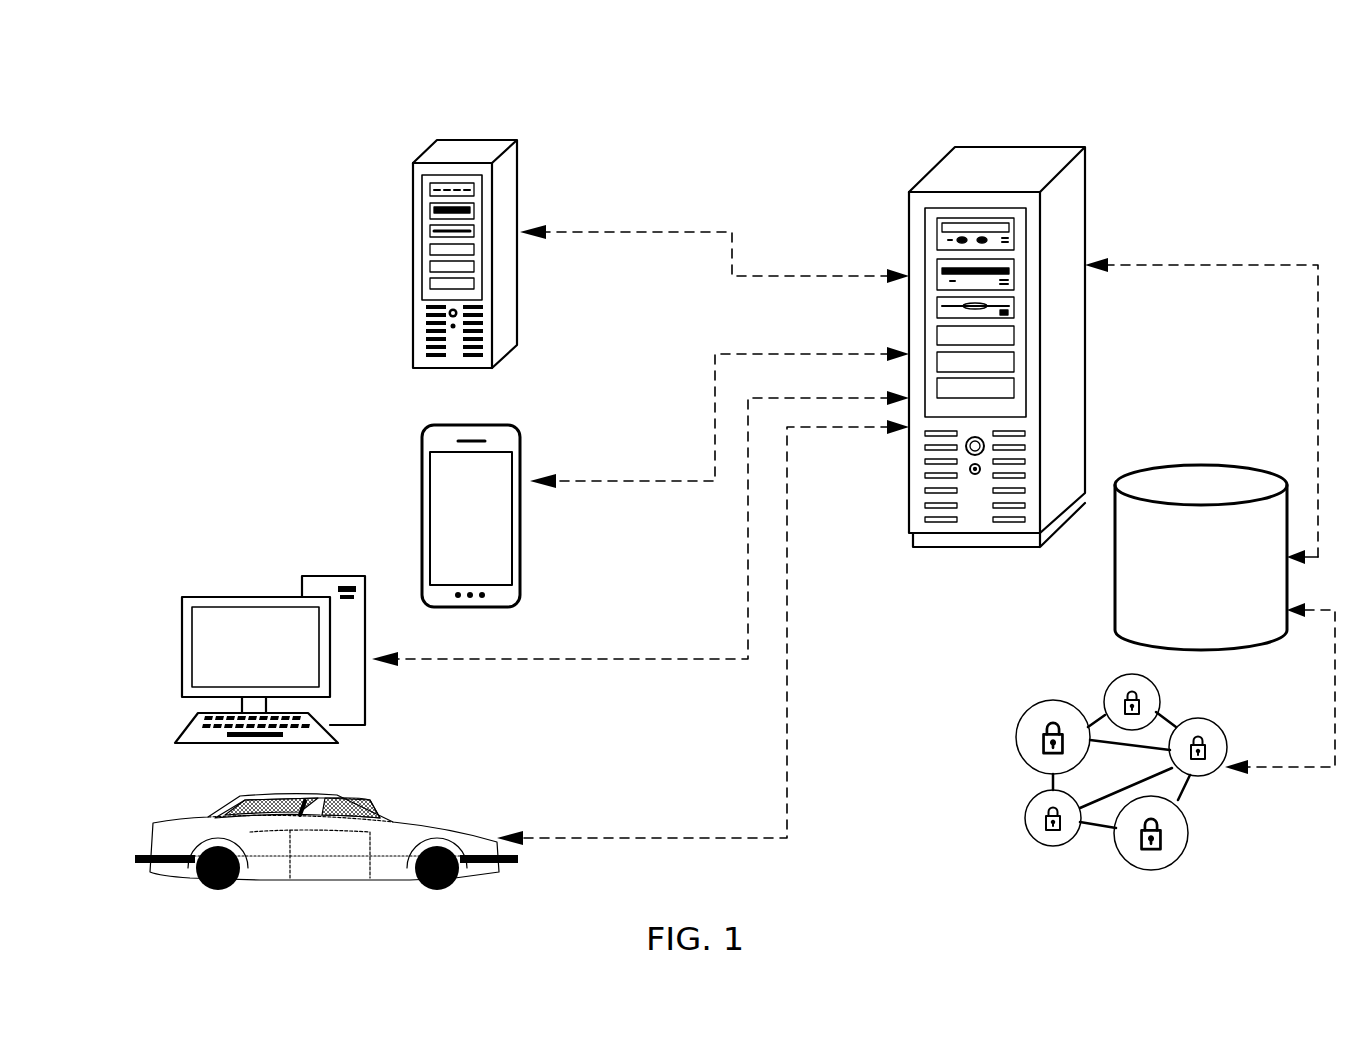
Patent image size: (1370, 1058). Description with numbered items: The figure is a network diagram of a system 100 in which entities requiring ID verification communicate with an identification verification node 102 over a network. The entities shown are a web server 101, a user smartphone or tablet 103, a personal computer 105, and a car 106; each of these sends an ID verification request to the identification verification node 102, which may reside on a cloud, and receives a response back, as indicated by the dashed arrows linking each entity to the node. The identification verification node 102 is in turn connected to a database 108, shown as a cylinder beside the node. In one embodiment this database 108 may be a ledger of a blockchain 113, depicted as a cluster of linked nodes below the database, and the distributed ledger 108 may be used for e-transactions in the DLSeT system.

The system 100 is at (150, 75).
The web server 101 is at (347, 254).
The identification verification node 102 is at (1013, 311).
The user smartphone 103 is at (441, 516).
The personal computer 105 is at (270, 648).
The car 106 is at (326, 838).
The database 108 is at (1201, 557).
The blockchain 113 is at (1058, 765).